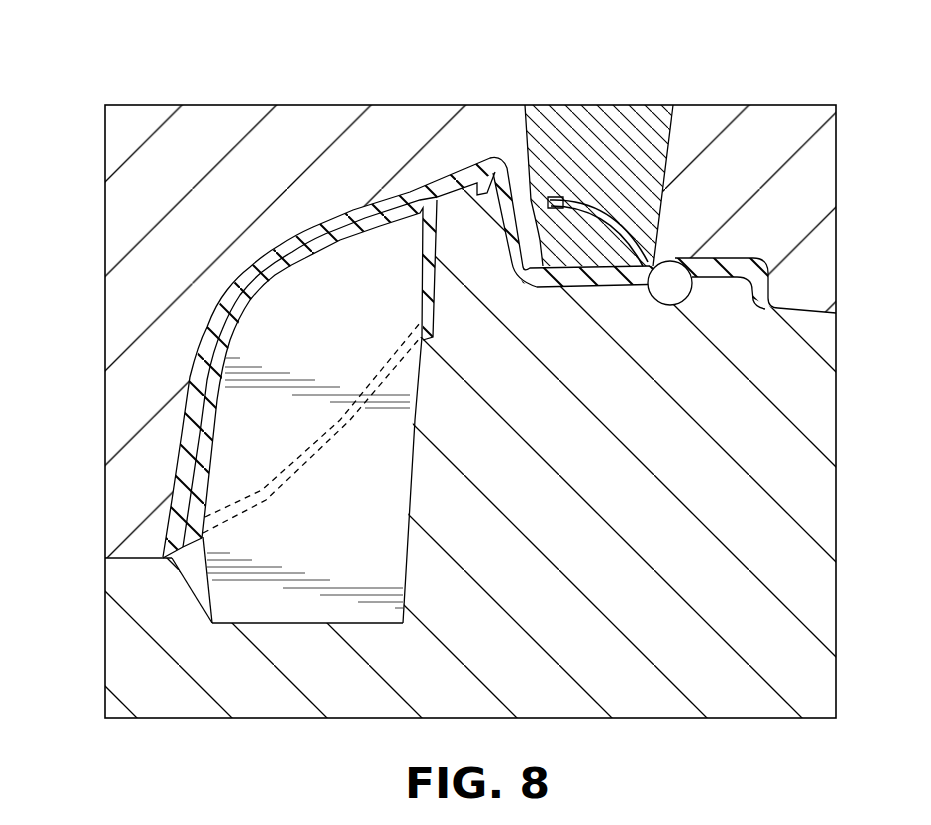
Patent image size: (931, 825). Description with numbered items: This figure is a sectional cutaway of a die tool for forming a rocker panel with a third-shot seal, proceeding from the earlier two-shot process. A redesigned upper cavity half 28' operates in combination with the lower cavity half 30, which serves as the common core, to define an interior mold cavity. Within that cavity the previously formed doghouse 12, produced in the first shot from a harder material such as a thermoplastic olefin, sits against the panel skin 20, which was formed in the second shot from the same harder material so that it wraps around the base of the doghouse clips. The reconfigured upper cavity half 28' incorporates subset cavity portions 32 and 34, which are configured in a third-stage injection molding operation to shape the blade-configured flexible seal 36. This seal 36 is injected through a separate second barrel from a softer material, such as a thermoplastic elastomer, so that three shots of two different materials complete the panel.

The doghouse 12 is at (442, 265).
The panel skin 20 is at (684, 295).
The redesigned upper cavity half 28' is at (426, 331).
The lower cavity half 30 is at (122, 638).
The subset cavity portion 32 is at (565, 135).
The subset cavity portion 34 is at (571, 163).
The flexible seal 36 is at (601, 203).